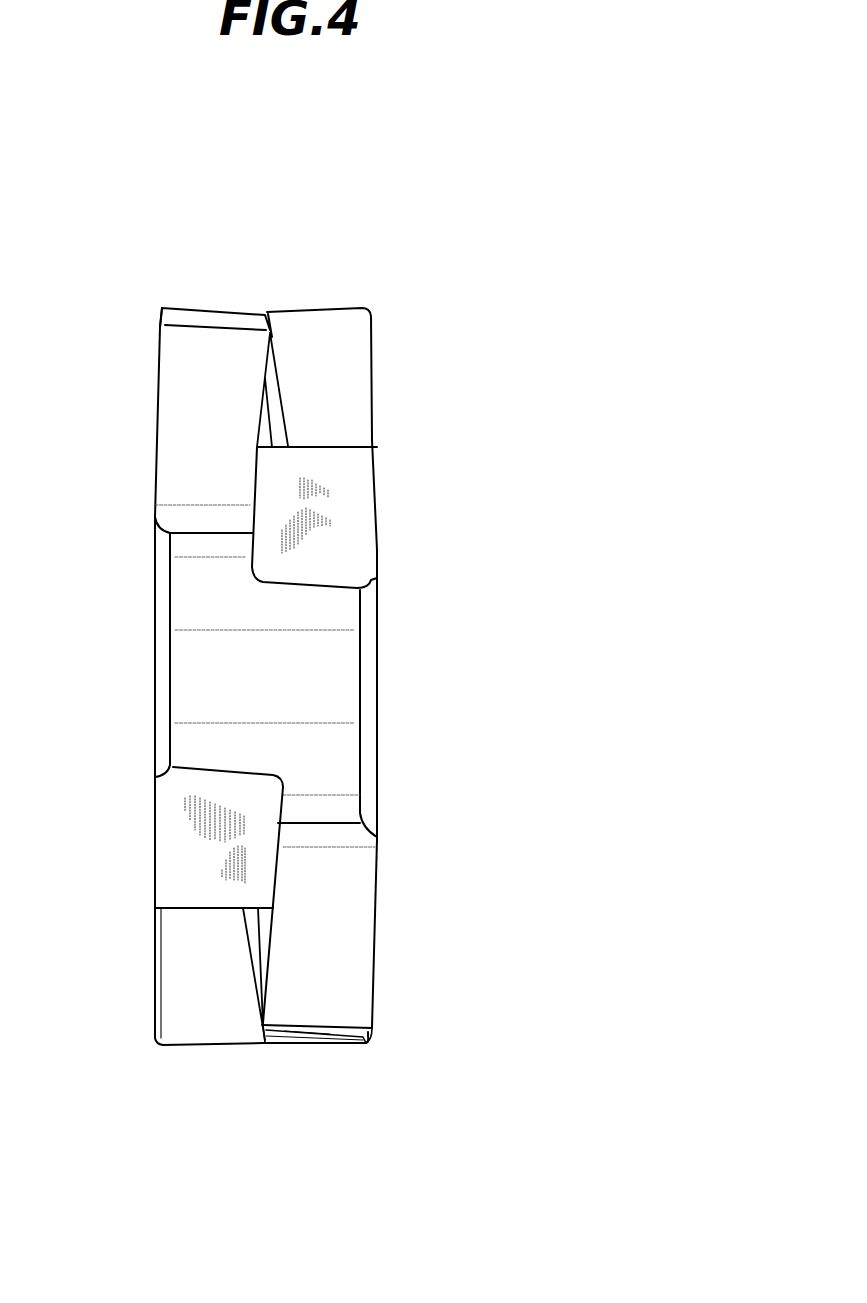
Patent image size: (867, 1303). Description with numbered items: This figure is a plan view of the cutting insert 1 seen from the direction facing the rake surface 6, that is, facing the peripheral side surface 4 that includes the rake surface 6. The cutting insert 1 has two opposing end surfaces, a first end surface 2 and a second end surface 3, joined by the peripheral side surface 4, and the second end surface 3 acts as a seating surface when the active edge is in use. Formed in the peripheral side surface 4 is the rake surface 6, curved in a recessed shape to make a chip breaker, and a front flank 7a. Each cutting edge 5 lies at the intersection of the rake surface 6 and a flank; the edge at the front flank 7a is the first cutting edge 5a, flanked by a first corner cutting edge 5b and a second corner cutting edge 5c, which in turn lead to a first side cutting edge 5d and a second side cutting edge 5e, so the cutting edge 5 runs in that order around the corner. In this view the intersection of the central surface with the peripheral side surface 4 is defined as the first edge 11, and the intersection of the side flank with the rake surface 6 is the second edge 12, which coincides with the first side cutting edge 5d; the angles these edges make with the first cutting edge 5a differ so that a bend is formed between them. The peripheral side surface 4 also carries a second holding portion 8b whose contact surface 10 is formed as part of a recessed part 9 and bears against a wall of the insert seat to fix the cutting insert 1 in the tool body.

The cutting insert 1 is at (393, 470).
The first end surface 2 is at (377, 552).
The second end surface 3 is at (155, 682).
The peripheral side surface 4 is at (218, 588).
The cutting edge 5 is at (217, 327).
The first cutting edge 5a is at (307, 1030).
The first corner cutting edge 5b is at (372, 1040).
The second corner cutting edge 5c is at (265, 1027).
The first side cutting edge 5d is at (373, 960).
The second side cutting edge 5e is at (257, 990).
The rake surface 6 is at (320, 975).
The front flank 7a is at (293, 1037).
The second holding portion 8b is at (270, 645).
The recessed part 9 is at (267, 682).
The contact surface 10 is at (275, 605).
The first edge 11 is at (377, 748).
The second edge 12 is at (375, 952).